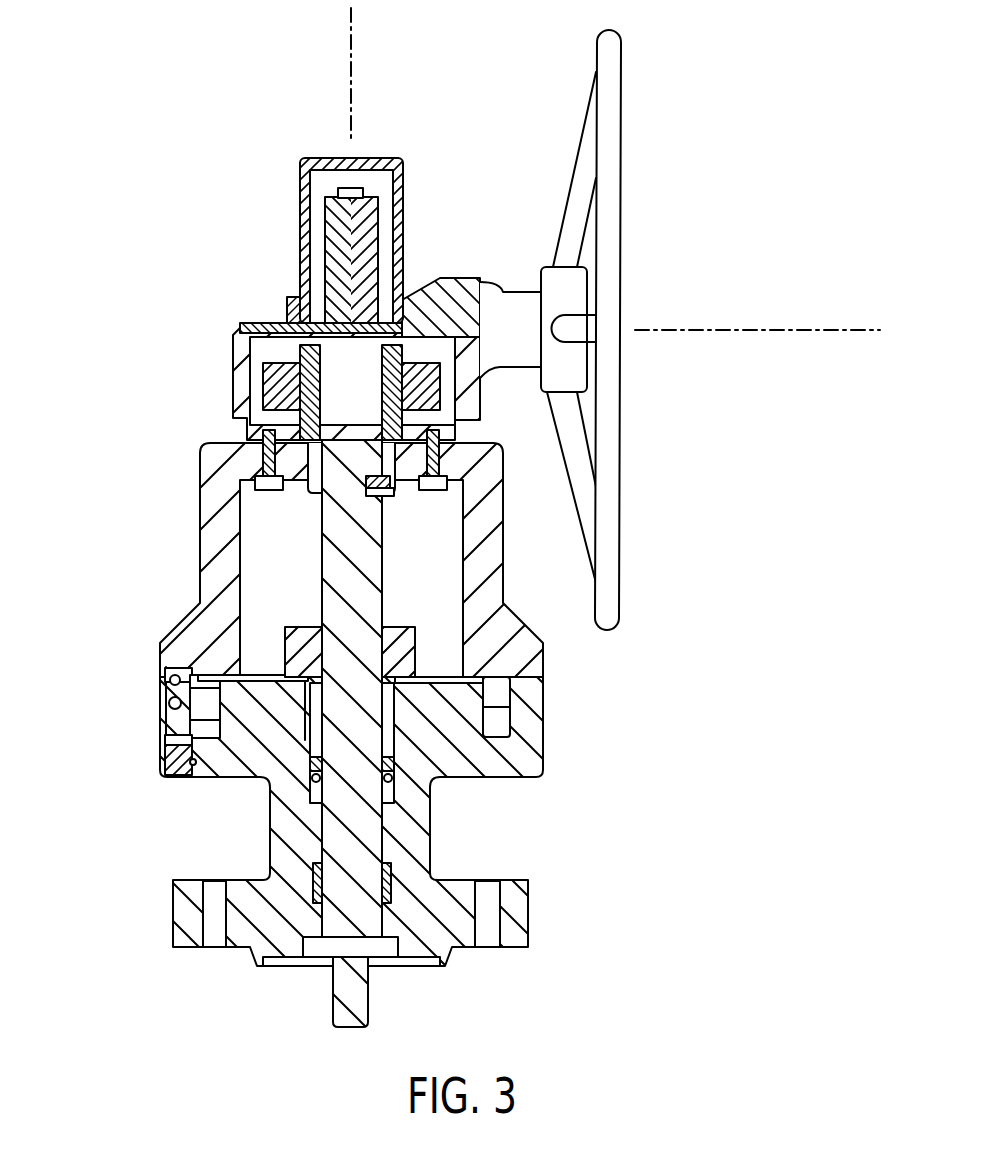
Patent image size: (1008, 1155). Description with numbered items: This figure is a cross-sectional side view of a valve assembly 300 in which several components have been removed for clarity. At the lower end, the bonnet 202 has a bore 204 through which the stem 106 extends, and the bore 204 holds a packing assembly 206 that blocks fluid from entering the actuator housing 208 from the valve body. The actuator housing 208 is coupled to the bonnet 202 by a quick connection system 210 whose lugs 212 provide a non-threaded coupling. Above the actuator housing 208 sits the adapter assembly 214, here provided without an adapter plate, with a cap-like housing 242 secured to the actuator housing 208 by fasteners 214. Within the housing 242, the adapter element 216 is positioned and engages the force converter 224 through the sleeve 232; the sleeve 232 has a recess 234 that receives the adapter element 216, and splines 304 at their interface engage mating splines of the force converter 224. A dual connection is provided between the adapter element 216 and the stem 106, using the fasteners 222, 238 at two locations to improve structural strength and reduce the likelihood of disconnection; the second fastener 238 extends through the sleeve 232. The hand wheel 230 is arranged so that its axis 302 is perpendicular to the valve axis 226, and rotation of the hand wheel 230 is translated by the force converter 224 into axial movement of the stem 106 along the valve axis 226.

The stem 106 is at (357, 593).
The bonnet 202 is at (518, 907).
The bore 204 is at (392, 880).
The packing assembly 206 is at (273, 700).
The actuator housing 208 is at (530, 685).
The quick connection system 210 is at (341, 778).
The lugs 212 is at (503, 718).
The adapter assembly 214 is at (312, 280).
The adapter element 216 is at (383, 457).
The fastener 222 is at (397, 487).
The force converter 224 is at (212, 372).
The valve axis 226 is at (351, 70).
The hand wheel 230 is at (607, 43).
The sleeve 232 is at (447, 278).
The recess 234 is at (297, 427).
The second fastener 238 is at (352, 192).
The housing 242 is at (290, 328).
The valve assembly 300 is at (465, 517).
The axis 302 is at (770, 330).
The splines 304 is at (263, 423).